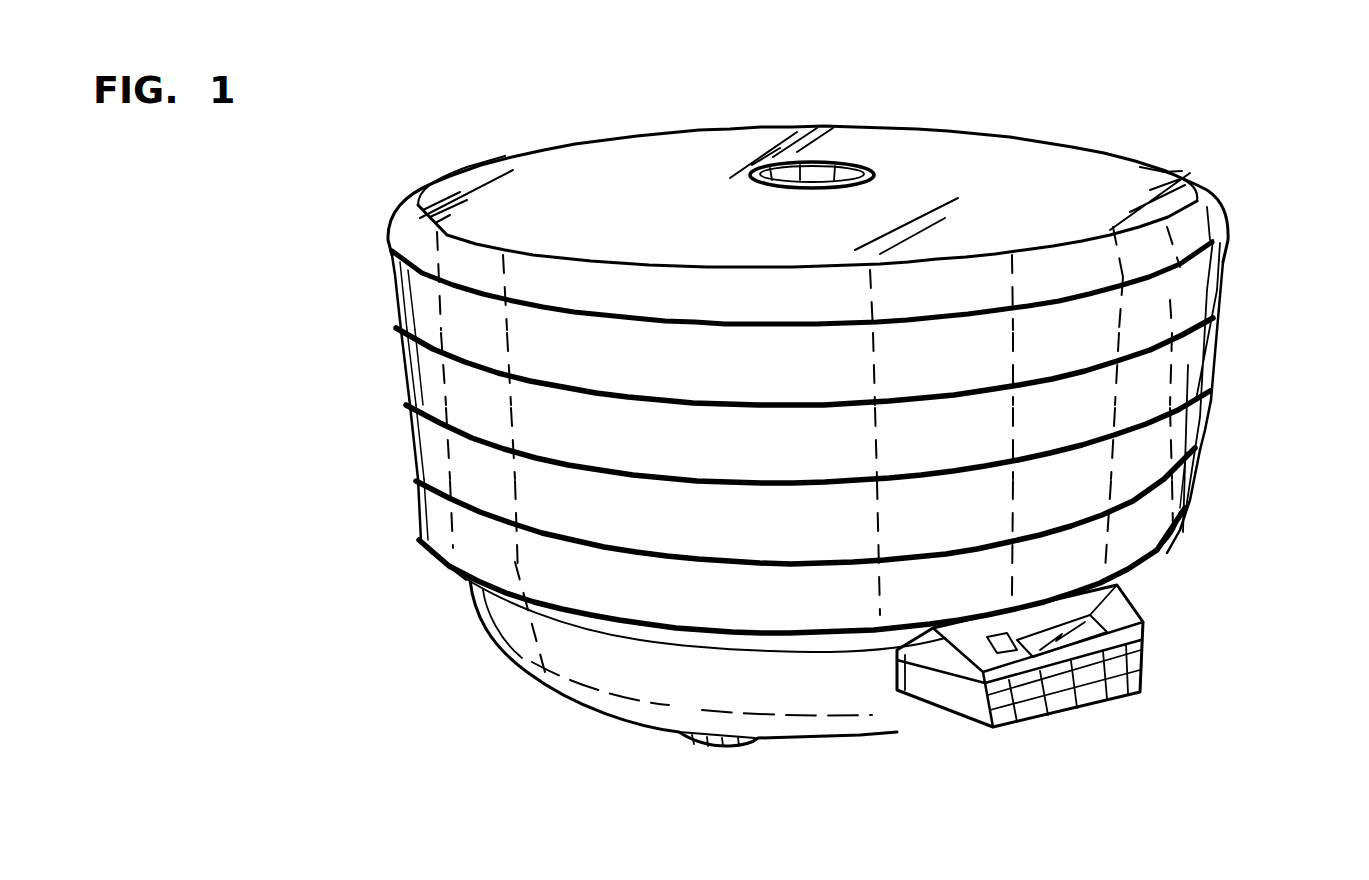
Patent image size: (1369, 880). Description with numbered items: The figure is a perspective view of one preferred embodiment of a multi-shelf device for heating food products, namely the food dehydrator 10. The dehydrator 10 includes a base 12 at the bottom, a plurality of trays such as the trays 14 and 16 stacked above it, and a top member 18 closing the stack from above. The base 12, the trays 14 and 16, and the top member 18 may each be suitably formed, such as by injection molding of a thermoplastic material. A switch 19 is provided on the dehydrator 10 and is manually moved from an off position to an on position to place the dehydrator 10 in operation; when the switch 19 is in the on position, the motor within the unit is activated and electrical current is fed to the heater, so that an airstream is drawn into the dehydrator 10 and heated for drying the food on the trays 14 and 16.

The food dehydrator 10 is at (1245, 105).
The base 12 is at (562, 656).
The tray 14 is at (1198, 345).
The tray 16 is at (1195, 419).
The top member 18 is at (1068, 153).
The switch 19 is at (1118, 718).